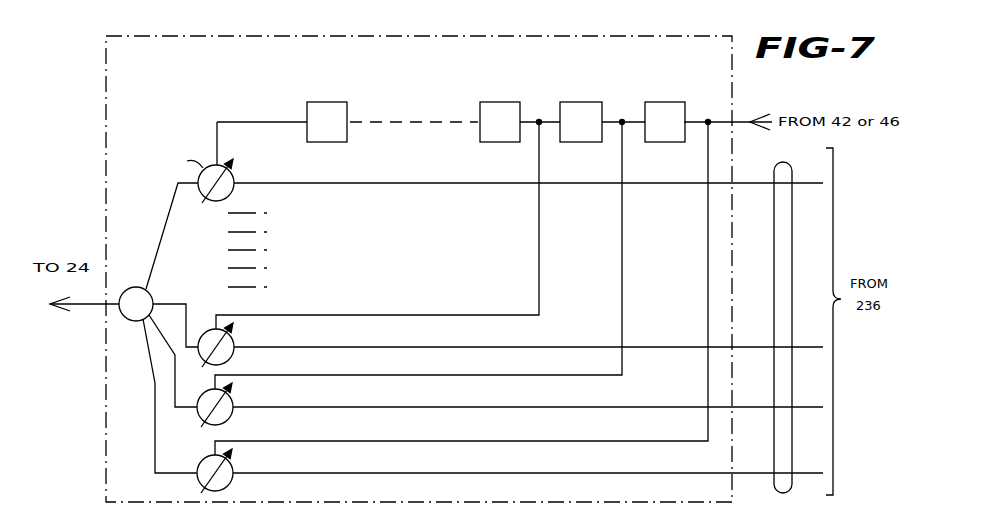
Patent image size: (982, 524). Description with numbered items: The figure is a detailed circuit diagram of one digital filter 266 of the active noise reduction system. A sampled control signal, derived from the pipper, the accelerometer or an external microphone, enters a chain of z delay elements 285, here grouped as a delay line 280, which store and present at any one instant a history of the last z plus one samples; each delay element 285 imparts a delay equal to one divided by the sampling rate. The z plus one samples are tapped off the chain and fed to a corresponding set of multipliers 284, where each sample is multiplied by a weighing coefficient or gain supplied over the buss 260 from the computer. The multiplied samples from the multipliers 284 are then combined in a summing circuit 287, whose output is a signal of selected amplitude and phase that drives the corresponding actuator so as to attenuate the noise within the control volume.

The digital filter 266 is at (419, 269).
The delay line 280 is at (461, 111).
The delay element 285 is at (498, 137).
The multiplier 284 is at (232, 192).
The summing circuit 287 is at (128, 287).
The buss 260 is at (805, 155).